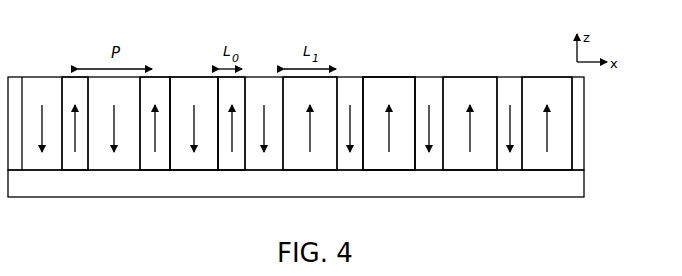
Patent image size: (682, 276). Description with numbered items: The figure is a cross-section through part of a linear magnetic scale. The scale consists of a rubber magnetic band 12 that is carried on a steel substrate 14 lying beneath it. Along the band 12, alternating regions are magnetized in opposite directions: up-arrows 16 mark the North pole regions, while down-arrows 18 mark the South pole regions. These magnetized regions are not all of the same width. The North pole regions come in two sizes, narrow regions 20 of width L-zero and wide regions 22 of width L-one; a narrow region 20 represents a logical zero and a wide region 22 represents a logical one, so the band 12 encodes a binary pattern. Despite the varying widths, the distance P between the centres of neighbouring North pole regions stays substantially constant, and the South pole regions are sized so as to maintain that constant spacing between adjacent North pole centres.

The rubber magnetic band 12 is at (586, 168).
The steel substrate 14 is at (578, 185).
The up-arrows 16 is at (392, 130).
The down-arrows 18 is at (193, 118).
The narrow regions 20 is at (153, 123).
The wide regions 22 is at (427, 123).